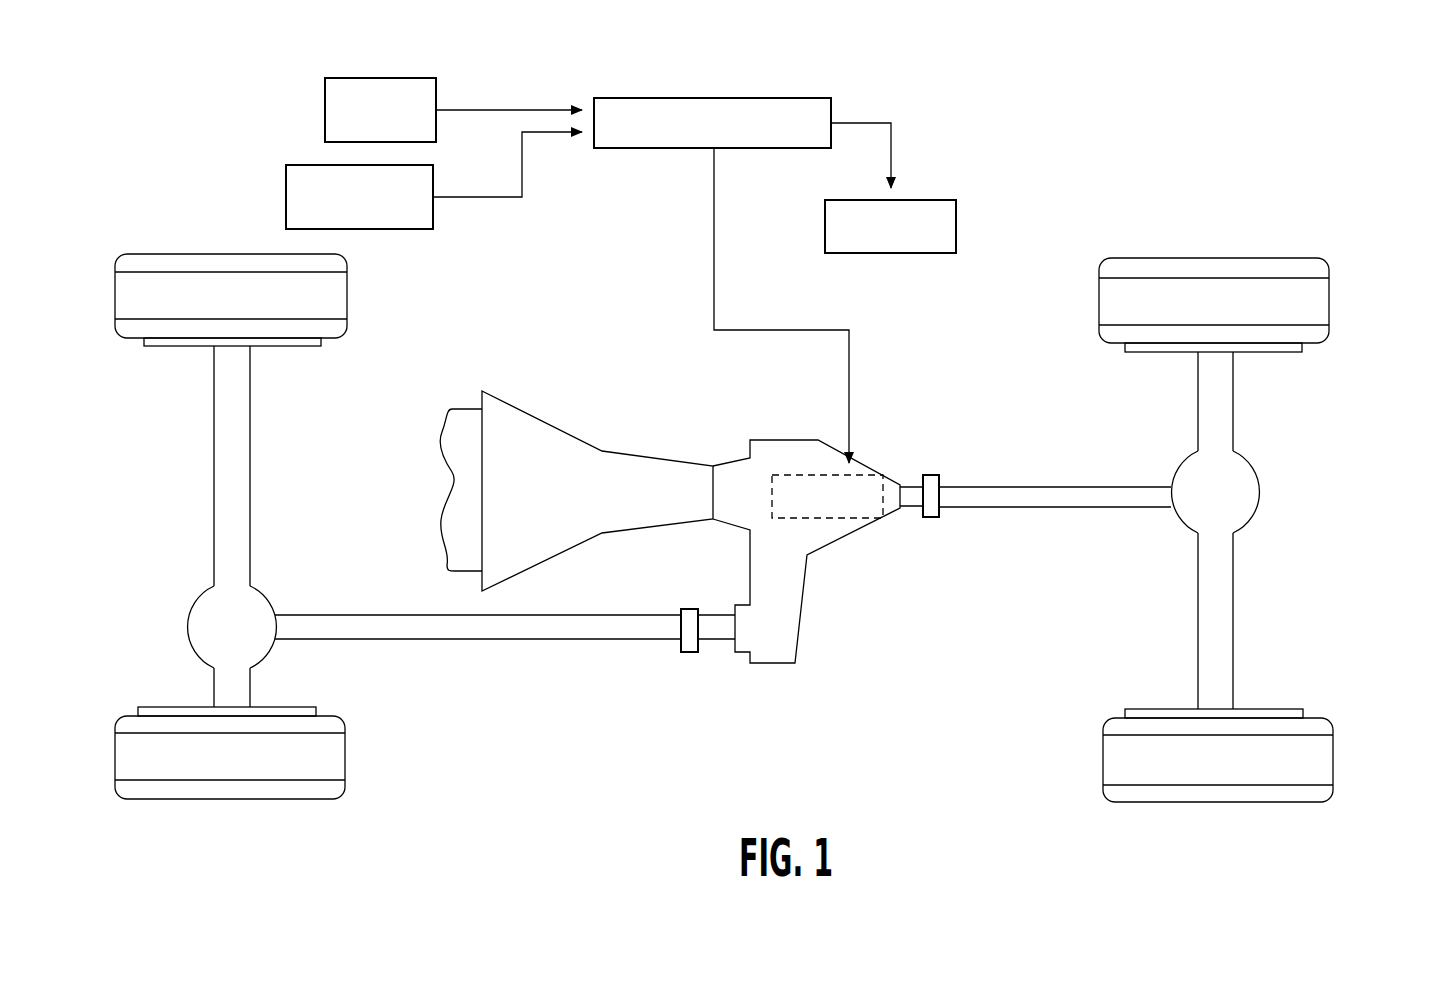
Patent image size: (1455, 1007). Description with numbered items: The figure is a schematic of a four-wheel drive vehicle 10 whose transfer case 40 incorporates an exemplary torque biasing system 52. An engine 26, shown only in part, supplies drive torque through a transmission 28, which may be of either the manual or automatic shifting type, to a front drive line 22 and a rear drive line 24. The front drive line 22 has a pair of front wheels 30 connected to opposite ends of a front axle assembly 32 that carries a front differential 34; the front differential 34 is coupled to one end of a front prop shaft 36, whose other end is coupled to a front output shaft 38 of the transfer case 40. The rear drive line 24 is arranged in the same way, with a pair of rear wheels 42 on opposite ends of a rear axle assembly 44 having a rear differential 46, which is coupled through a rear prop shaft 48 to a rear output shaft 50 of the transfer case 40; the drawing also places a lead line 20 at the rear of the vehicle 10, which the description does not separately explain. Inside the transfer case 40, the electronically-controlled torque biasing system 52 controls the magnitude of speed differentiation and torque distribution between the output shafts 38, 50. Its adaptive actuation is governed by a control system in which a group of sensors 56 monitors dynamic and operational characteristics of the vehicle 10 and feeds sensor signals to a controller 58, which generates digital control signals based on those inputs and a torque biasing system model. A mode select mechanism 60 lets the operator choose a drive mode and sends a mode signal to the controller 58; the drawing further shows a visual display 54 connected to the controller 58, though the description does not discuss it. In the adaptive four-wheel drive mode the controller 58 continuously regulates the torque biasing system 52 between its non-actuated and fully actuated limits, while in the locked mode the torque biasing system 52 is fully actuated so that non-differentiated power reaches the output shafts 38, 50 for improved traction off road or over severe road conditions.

The four-wheel drive vehicle 10 is at (1115, 126).
The rear axle assembly 20 is at (1392, 472).
The front drive line 22 is at (296, 500).
The rear drive line 24 is at (1083, 452).
The engine 26 is at (466, 477).
The transmission 28 is at (619, 515).
The front wheels 30 is at (155, 288).
The front axle assembly 32 is at (224, 410).
The front differential 34 is at (207, 623).
The front prop shaft 36 is at (601, 626).
The front output shaft 38 is at (718, 630).
The transfer case 40 is at (846, 550).
The rear wheels 42 is at (1218, 292).
The rear axle assembly 44 is at (1216, 390).
The rear differential 46 is at (1243, 495).
The rear prop shaft 48 is at (1093, 497).
The rear output shaft 50 is at (905, 483).
The torque biasing system 52 is at (817, 450).
The visual display 54 is at (890, 226).
The group of sensors 56 is at (325, 108).
The controller 58 is at (648, 97).
The mode select mechanism 60 is at (393, 230).